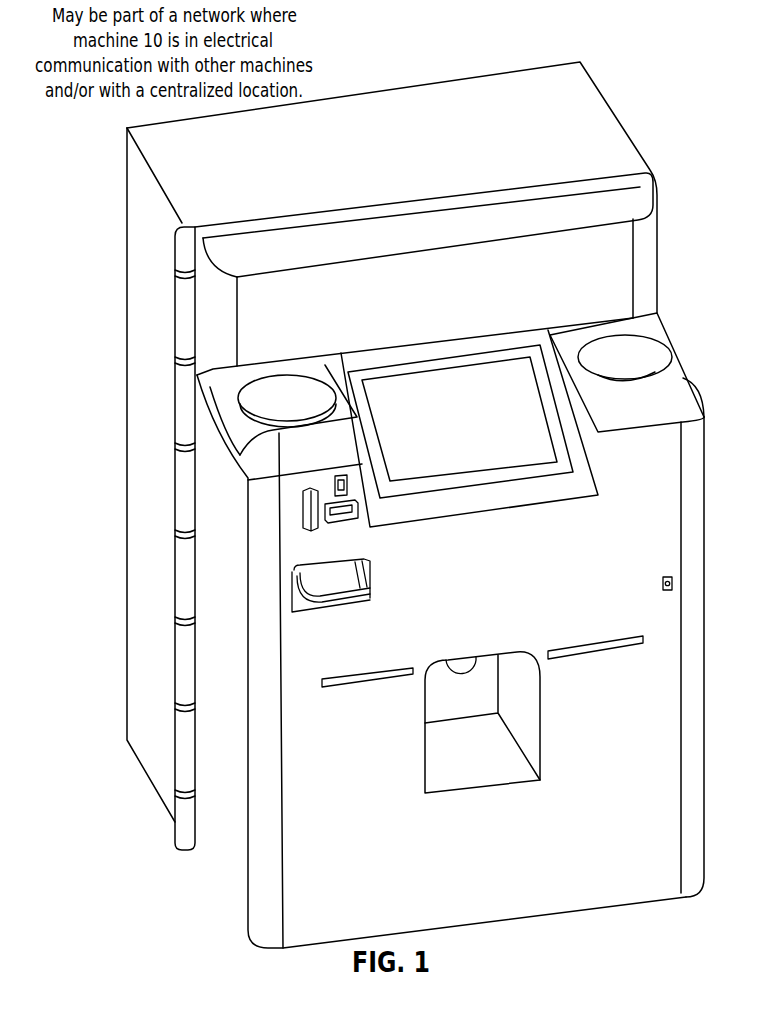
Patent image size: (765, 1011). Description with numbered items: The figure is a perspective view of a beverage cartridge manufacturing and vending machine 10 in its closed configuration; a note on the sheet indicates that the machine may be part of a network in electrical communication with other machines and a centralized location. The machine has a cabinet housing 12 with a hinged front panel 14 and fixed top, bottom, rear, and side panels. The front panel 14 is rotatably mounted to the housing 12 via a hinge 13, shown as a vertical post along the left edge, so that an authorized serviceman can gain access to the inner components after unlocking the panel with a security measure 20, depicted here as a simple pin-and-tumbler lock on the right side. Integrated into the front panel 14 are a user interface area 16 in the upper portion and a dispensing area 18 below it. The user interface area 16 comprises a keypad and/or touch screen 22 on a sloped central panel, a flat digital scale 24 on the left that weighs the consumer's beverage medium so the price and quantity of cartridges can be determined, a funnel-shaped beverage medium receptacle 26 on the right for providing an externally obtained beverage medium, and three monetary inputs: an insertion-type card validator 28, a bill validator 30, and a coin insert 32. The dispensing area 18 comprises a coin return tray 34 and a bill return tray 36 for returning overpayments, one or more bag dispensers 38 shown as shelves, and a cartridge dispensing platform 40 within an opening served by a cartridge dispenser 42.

The beverage cartridge manufacturing and vending machine 10 is at (345, 77).
The cabinet housing 12 is at (128, 435).
The hinge 13 is at (183, 257).
The hinged front panel 14 is at (208, 585).
The user interface area 16 is at (402, 337).
The dispensing area 18 is at (360, 807).
The security measure 20 is at (665, 577).
The keypad and/or touch screen 22 is at (477, 378).
The scale 24 is at (272, 402).
The beverage medium receptacle 26 is at (608, 352).
The card validator 28 is at (302, 510).
The bill validator 30 is at (358, 512).
The coin insert 32 is at (338, 475).
The coin return tray 34 is at (345, 577).
The bill return tray 36 is at (318, 610).
The bag dispenser 38 is at (590, 645).
The cartridge dispensing platform 40 is at (463, 752).
The cartridge dispenser 42 is at (465, 666).